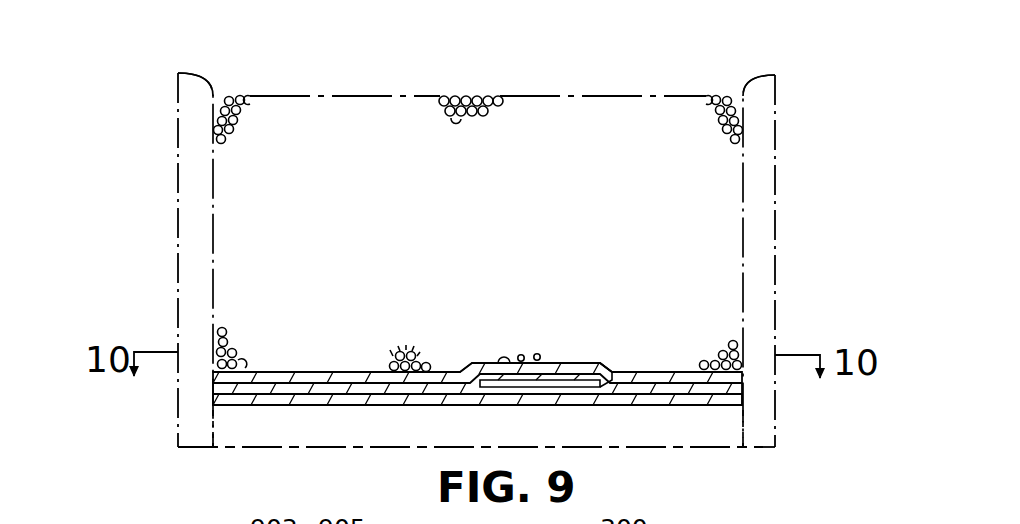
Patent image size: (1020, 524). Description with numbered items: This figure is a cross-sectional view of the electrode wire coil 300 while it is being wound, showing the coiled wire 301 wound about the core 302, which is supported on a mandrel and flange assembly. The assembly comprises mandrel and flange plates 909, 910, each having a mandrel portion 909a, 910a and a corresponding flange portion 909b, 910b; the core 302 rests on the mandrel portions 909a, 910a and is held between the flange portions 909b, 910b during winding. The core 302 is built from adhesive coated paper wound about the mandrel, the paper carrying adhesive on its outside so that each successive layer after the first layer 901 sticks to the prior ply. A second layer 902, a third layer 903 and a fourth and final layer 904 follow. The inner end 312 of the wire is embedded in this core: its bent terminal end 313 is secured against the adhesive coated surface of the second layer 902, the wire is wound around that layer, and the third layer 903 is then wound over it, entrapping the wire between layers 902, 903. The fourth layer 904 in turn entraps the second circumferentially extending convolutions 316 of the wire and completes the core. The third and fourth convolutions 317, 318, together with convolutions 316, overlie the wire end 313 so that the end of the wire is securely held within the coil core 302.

The electrode wire coil 300 is at (678, 52).
The coiled wire 301 is at (480, 92).
The core 302 is at (258, 408).
The inner end of the electrode wire 312 is at (481, 392).
The terminal end 313 is at (593, 374).
The second convolutions of the electrode wire 316 is at (503, 357).
The third convolution of the electrode wire 317 is at (523, 354).
The fourth convolution of the electrode wire 318 is at (541, 353).
The first layer 901 is at (292, 405).
The second layer 902 is at (348, 405).
The third layer 903 is at (384, 370).
The fourth layer 904 is at (441, 372).
The mandrel and flange plate 909 is at (176, 275).
The mandrel portion 909a is at (742, 423).
The flange portion 909b is at (186, 178).
The mandrel and flange plate 910 is at (780, 140).
The mandrel portion 910a is at (213, 428).
The flange portion 910b is at (758, 233).